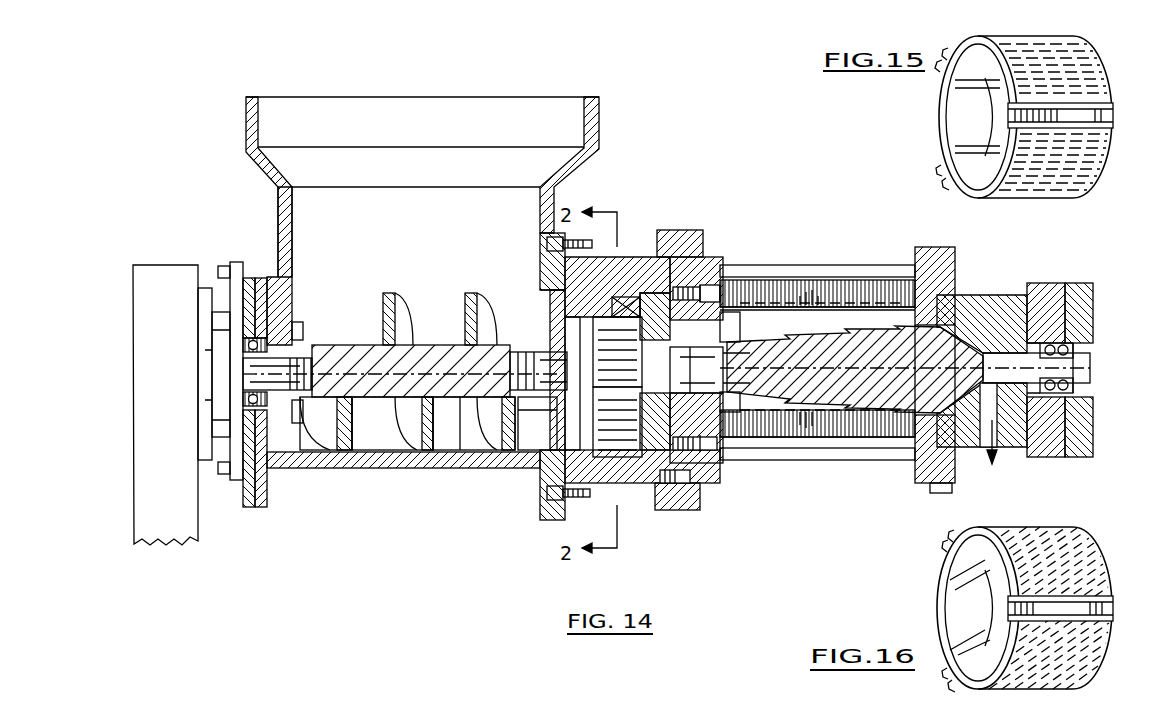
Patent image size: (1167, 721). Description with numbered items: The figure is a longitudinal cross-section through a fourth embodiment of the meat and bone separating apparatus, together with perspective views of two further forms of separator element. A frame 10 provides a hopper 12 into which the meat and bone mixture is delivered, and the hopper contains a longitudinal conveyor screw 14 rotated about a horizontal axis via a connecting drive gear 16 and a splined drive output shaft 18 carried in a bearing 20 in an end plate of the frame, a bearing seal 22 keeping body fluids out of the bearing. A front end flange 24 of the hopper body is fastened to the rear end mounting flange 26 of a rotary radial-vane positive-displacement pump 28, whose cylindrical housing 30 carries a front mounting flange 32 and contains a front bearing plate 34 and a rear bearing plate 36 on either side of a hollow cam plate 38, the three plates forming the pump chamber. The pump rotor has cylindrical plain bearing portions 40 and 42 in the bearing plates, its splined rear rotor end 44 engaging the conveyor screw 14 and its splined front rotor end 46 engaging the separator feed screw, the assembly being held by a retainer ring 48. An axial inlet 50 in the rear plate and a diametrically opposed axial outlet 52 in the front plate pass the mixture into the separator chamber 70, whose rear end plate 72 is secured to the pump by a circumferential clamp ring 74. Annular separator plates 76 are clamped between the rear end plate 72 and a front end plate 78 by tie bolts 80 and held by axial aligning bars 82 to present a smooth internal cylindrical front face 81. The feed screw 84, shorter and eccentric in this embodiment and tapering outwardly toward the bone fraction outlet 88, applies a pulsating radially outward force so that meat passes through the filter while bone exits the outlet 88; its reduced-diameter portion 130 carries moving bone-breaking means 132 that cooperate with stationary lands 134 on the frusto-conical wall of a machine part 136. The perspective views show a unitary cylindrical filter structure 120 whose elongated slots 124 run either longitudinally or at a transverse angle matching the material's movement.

In FIG. 14, the frame 10 is at (407, 468).
In FIG. 14, the hopper 12 is at (422, 187).
In FIG. 14, the conveyor screw 14 is at (477, 357).
In FIG. 14, the connecting drive gear 16 is at (188, 403).
In FIG. 14, the splined drive output shaft 18 is at (317, 360).
In FIG. 14, the bearing 20 is at (245, 345).
In FIG. 14, the bearing seal 22 is at (296, 330).
In FIG. 14, the front end flange 24 is at (548, 476).
In FIG. 14, the rear end mounting flange 26 is at (575, 500).
In FIG. 14, the rotary radial-vane positive-displacement pump 28 is at (640, 510).
In FIG. 14, the cylindrical housing 30 is at (622, 258).
In FIG. 14, the front mounting flange 32 is at (680, 235).
In FIG. 14, the front bearing plate 34 is at (640, 325).
In FIG. 14, the rear bearing plate 36 is at (548, 274).
In FIG. 14, the hollow cam plate 38 is at (630, 265).
In FIG. 14, the cylindrical plain bearing portion 40 is at (545, 352).
In FIG. 14, the cylindrical plain bearing portion 42 is at (650, 355).
In FIG. 14, the rear rotor end 44 is at (485, 408).
In FIG. 14, the front rotor end 46 is at (748, 440).
In FIG. 14, the retainer ring 48 is at (702, 475).
In FIG. 14, the axial inlet 50 is at (565, 445).
In FIG. 14, the axial outlet 52 is at (682, 297).
In FIG. 14, the separator chamber 70 is at (757, 320).
In FIG. 14, the rear end plate 72 is at (700, 500).
In FIG. 14, the circumferential clamp ring 74 is at (676, 505).
In FIG. 14, the separator plates 76 is at (827, 430).
In FIG. 14, the front end plate 78 is at (953, 292).
In FIG. 14, the tie bolts 80 is at (860, 270).
In FIG. 14, the internal cylindrical front face 81 is at (802, 445).
In FIG. 14, the axial aligning bars 82 is at (818, 285).
In FIG. 14, the feed screw 84 is at (765, 388).
In FIG. 14, the annular bone fraction outlet 88 is at (997, 440).
In FIG. 15, the unitary filter structure 120 is at (975, 43).
In FIG. 16, the unitary filter structure 120 is at (1100, 574).
In FIG. 15, the slots 124 is at (1070, 48).
In FIG. 16, the slots 124 is at (1082, 548).
In FIG. 14, the screw portion of reduced diameter 130 is at (990, 330).
In FIG. 14, the moving bone-breaking means 132 is at (967, 440).
In FIG. 14, the stationary lands 134 is at (940, 484).
In FIG. 14, the machine part 136 is at (1010, 330).